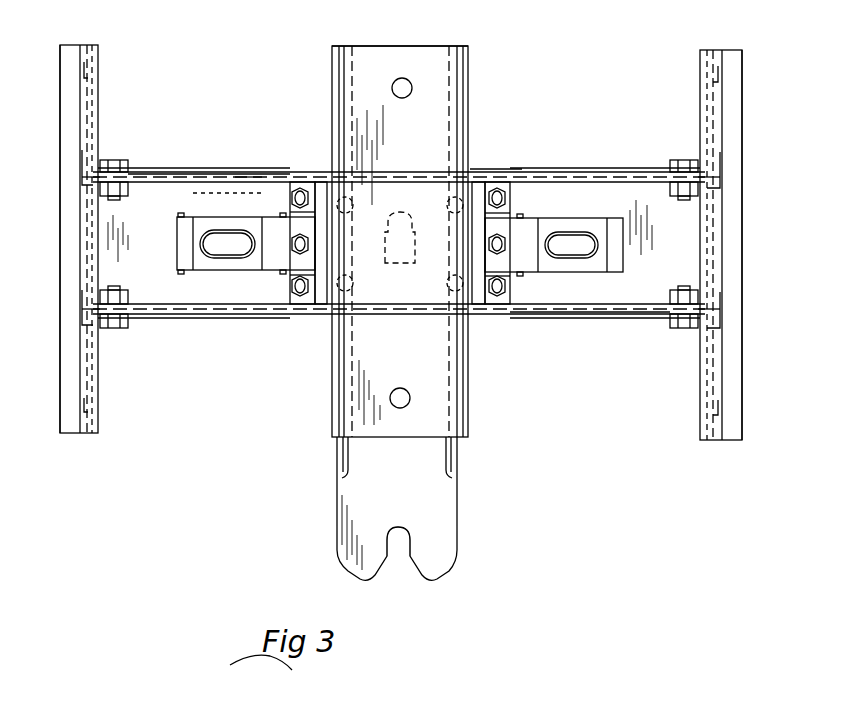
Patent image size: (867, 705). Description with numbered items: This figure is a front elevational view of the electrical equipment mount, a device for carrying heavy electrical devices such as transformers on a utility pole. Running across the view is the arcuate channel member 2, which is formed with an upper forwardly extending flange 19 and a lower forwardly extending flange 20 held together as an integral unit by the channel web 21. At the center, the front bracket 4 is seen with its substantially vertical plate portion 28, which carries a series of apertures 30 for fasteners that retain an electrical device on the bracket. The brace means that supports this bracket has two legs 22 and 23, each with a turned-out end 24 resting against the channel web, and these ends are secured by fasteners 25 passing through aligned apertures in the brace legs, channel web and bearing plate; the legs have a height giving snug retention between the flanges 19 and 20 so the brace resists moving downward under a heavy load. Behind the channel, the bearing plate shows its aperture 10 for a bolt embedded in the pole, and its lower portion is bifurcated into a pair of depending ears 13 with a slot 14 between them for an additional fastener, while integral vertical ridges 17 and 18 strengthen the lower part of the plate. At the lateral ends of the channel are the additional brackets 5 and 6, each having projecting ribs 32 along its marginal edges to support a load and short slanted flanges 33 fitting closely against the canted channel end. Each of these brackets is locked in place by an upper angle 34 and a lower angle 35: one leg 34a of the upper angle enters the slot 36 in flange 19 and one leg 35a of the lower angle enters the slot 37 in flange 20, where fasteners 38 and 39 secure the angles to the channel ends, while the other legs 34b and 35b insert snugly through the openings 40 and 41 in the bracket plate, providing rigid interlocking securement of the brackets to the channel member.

The channel member 2 is at (520, 172).
The front bracket 4 is at (471, 93).
The additional bracket 5 is at (103, 57).
The additional bracket 6 is at (697, 72).
The aperture 10 is at (405, 213).
The depending ears 13 is at (355, 577).
The slot 14 is at (403, 524).
The vertical ridge 17 is at (346, 463).
The vertical ridge 18 is at (451, 458).
The upper flange 19 is at (247, 181).
The lower flange 20 is at (233, 307).
The channel web 21 is at (196, 193).
The brace leg 22 is at (323, 298).
The brace leg 23 is at (476, 299).
The turned-out end 24 is at (292, 305).
The fastener 25 is at (293, 184).
The plate portion 28 is at (408, 53).
The aperture 30 is at (408, 96).
The projecting rib 32 is at (72, 381).
The short flange 33 is at (96, 121).
The angle 34 is at (82, 156).
The angle leg 34a is at (121, 172).
The angle leg 34b is at (83, 88).
The angle 35 is at (82, 318).
The angle leg 35a is at (132, 314).
The angle leg 35b is at (93, 401).
The slot 36 is at (166, 177).
The slot 37 is at (563, 315).
The fastener 38 is at (108, 161).
The fastener 39 is at (118, 290).
The opening 40 is at (90, 180).
The opening 41 is at (88, 301).